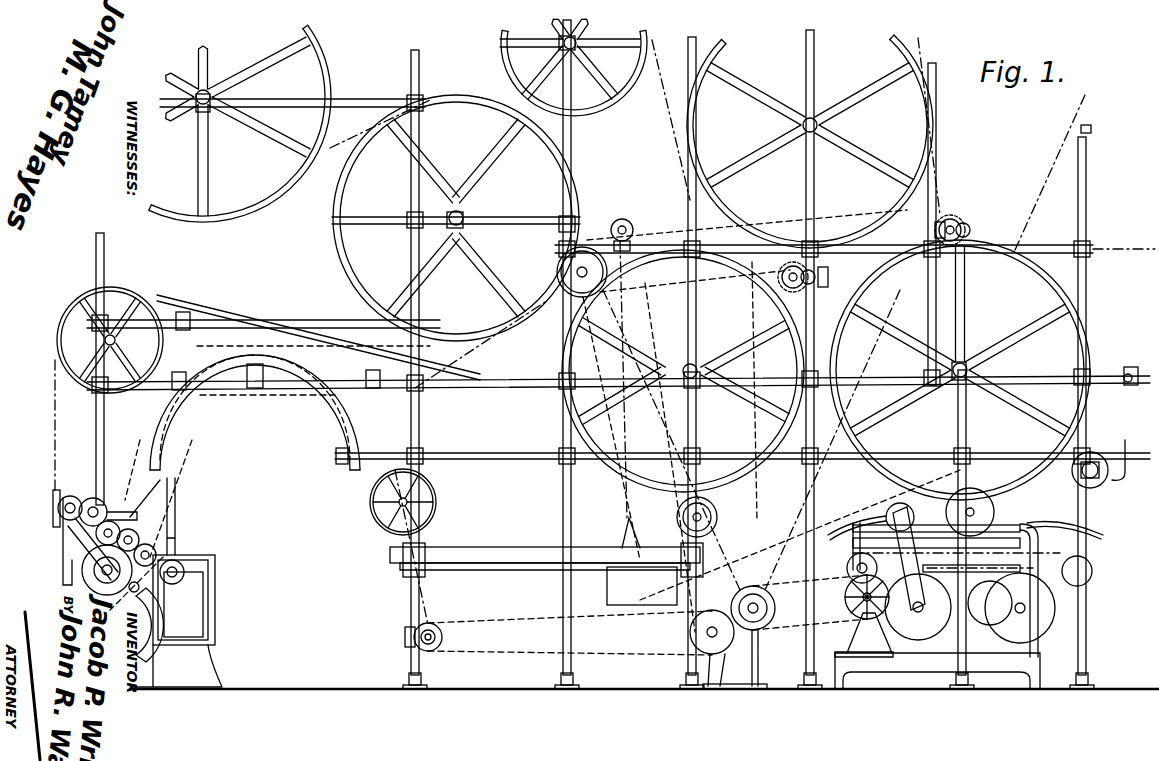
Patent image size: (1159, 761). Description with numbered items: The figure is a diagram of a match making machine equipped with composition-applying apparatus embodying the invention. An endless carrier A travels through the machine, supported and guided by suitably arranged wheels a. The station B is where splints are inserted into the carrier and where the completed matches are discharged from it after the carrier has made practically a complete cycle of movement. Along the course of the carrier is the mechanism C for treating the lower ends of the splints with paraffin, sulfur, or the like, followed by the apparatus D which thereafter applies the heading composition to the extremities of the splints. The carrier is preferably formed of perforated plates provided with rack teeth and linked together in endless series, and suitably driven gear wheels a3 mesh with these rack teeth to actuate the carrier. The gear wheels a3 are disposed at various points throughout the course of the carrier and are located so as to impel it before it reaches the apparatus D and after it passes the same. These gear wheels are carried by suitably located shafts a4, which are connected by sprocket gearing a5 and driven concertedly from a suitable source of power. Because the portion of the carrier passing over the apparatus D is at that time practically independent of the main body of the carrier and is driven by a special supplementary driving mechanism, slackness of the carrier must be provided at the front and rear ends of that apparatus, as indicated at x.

The wheels a is at (62, 357).
The gear wheels a3 is at (996, 218).
The shafts a4 is at (978, 180).
The sprocket gearing a5 is at (205, 447).
The endless carrier A is at (55, 424).
The station B is at (62, 573).
The mechanism for treating the lower ends of the splints C is at (546, 561).
The composition-applying apparatus D is at (955, 588).
The slackness of the carrier x is at (832, 524).